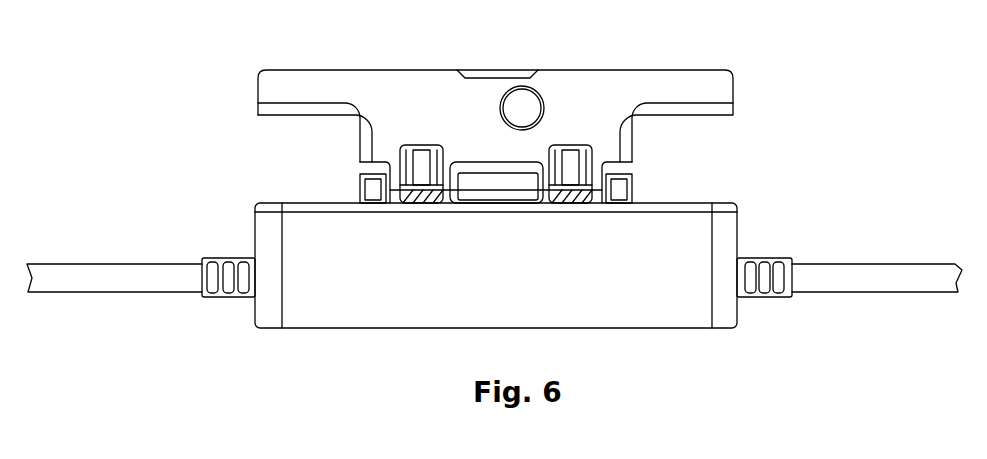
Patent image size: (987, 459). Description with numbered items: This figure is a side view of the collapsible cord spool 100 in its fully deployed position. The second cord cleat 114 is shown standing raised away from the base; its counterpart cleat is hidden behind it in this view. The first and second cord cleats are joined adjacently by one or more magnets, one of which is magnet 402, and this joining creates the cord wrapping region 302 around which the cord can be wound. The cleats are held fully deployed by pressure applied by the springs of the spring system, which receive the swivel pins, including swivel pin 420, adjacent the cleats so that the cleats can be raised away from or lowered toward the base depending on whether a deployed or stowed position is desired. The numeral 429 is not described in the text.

The collapsible cord spool 100 is at (770, 122).
The second cord cleat 114 is at (262, 72).
The cord wrapping region 302 is at (658, 145).
The magnet 402 is at (546, 101).
The swivel pin 420 is at (420, 203).
The right contact clip 429 is at (581, 207).